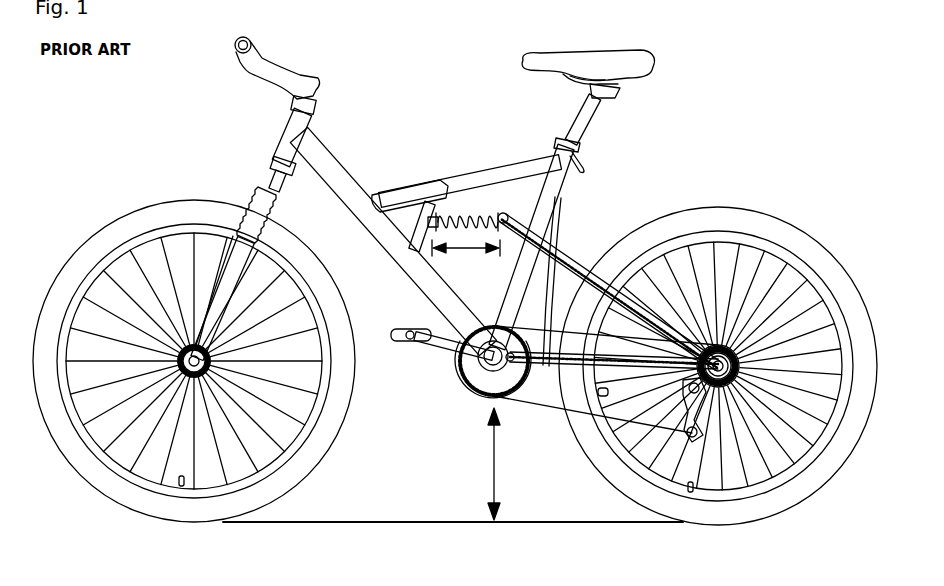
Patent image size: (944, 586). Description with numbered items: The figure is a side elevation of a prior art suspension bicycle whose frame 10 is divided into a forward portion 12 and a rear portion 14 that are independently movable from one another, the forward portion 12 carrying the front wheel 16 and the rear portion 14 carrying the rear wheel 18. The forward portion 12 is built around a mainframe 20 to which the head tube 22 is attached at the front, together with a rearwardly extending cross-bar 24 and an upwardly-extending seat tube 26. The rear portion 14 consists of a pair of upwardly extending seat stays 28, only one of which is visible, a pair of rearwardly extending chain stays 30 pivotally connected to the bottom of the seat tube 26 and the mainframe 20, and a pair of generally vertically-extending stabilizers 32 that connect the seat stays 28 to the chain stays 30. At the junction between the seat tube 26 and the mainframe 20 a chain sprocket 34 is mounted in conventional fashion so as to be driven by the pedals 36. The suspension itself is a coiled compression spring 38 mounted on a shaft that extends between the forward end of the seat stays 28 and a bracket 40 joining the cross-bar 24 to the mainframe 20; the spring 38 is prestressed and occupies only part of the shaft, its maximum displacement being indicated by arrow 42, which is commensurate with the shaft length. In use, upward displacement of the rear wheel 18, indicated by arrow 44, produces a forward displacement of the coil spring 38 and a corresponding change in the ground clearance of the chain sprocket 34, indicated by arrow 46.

The bicycle frame 10 is at (374, 80).
The forward portion 12 is at (386, 137).
The rear portion 14 is at (558, 240).
The front wheel 16 is at (148, 190).
The rear wheel 18 is at (766, 214).
The mainframe 20 is at (370, 241).
The head tube 22 is at (286, 127).
The cross-bar 24 is at (447, 177).
The seat tube 26 is at (548, 192).
The seat stays 28 is at (590, 267).
The chain stays 30 is at (598, 392).
The stabilizers 32 is at (548, 305).
The chain sprocket 34 is at (462, 385).
The pedals 36 is at (410, 330).
The coiled compression spring 38 is at (503, 212).
The bracket 40 is at (424, 216).
The arrow indicating maximum spring displacement 42 is at (456, 248).
The arrow indicating upward rear wheel displacement 44 is at (611, 175).
The arrow indicating change in ground clearance 46 is at (492, 468).